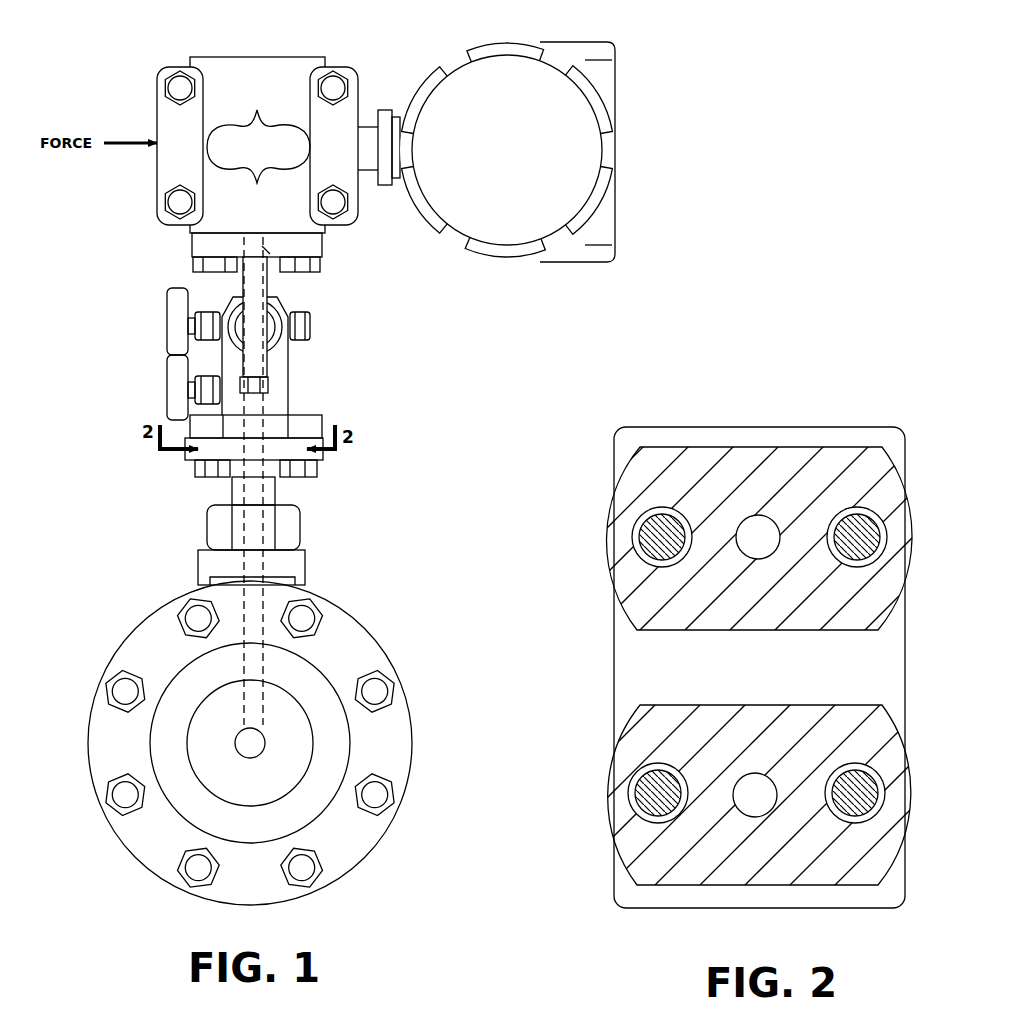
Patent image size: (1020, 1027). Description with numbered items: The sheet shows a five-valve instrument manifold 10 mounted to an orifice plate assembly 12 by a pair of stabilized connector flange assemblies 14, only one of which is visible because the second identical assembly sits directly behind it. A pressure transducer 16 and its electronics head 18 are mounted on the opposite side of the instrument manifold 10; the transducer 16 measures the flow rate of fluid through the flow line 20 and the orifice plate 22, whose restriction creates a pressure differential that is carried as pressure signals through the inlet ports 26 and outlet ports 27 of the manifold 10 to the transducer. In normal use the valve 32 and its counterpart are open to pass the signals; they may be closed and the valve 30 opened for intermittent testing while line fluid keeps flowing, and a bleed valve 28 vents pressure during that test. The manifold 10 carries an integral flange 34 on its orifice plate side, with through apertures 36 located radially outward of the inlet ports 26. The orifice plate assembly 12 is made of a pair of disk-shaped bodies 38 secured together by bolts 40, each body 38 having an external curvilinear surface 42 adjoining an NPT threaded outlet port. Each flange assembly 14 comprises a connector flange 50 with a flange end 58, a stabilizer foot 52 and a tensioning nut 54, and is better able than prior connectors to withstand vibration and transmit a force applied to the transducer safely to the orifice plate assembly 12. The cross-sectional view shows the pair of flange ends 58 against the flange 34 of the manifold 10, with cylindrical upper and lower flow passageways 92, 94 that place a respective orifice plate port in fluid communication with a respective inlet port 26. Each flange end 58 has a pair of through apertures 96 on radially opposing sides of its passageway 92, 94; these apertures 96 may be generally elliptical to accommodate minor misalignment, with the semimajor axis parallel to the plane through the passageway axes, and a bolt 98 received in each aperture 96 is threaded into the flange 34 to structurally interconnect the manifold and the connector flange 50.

In FIG. 1, the five-valve instrument manifold 10 is at (322, 368).
In FIG. 1, the orifice plate assembly 12 is at (412, 665).
In FIG. 1, the stabilized connector flange assembly 14 is at (324, 553).
In FIG. 1, the pressure transducer 16 is at (302, 62).
In FIG. 1, the electronics head 18 is at (455, 228).
In FIG. 1, the flow line 20 is at (252, 750).
In FIG. 1, the orifice plate 22 is at (292, 760).
In FIG. 1, the inlet port 26 is at (263, 415).
In FIG. 1, the outlet port 27 is at (306, 276).
In FIG. 1, the bleed valve 28 is at (207, 390).
In FIG. 1, the valve 30 is at (210, 327).
In FIG. 1, the valve 32 is at (262, 327).
In FIG. 1, the flange 34 is at (308, 427).
In FIG. 2, the flange 34 is at (625, 673).
In FIG. 1, the through aperture 36 is at (210, 427).
In FIG. 1, the disk-shaped body 38 is at (360, 843).
In FIG. 1, the bolt 40 is at (383, 810).
In FIG. 1, the external curvilinear surface 42 is at (145, 618).
In FIG. 1, the connector flange 50 is at (276, 497).
In FIG. 1, the stabilizer foot 52 is at (302, 568).
In FIG. 1, the tensioning nut 54 is at (290, 533).
In FIG. 1, the flange end 58 is at (318, 458).
In FIG. 2, the flange end 58 is at (641, 468).
In FIG. 2, the upper flow passageway 92 is at (766, 530).
In FIG. 2, the lower flow passageway 94 is at (758, 795).
In FIG. 2, the through aperture 96 is at (656, 503).
In FIG. 1, the bolt 98 is at (193, 473).
In FIG. 2, the bolt 98 is at (870, 550).